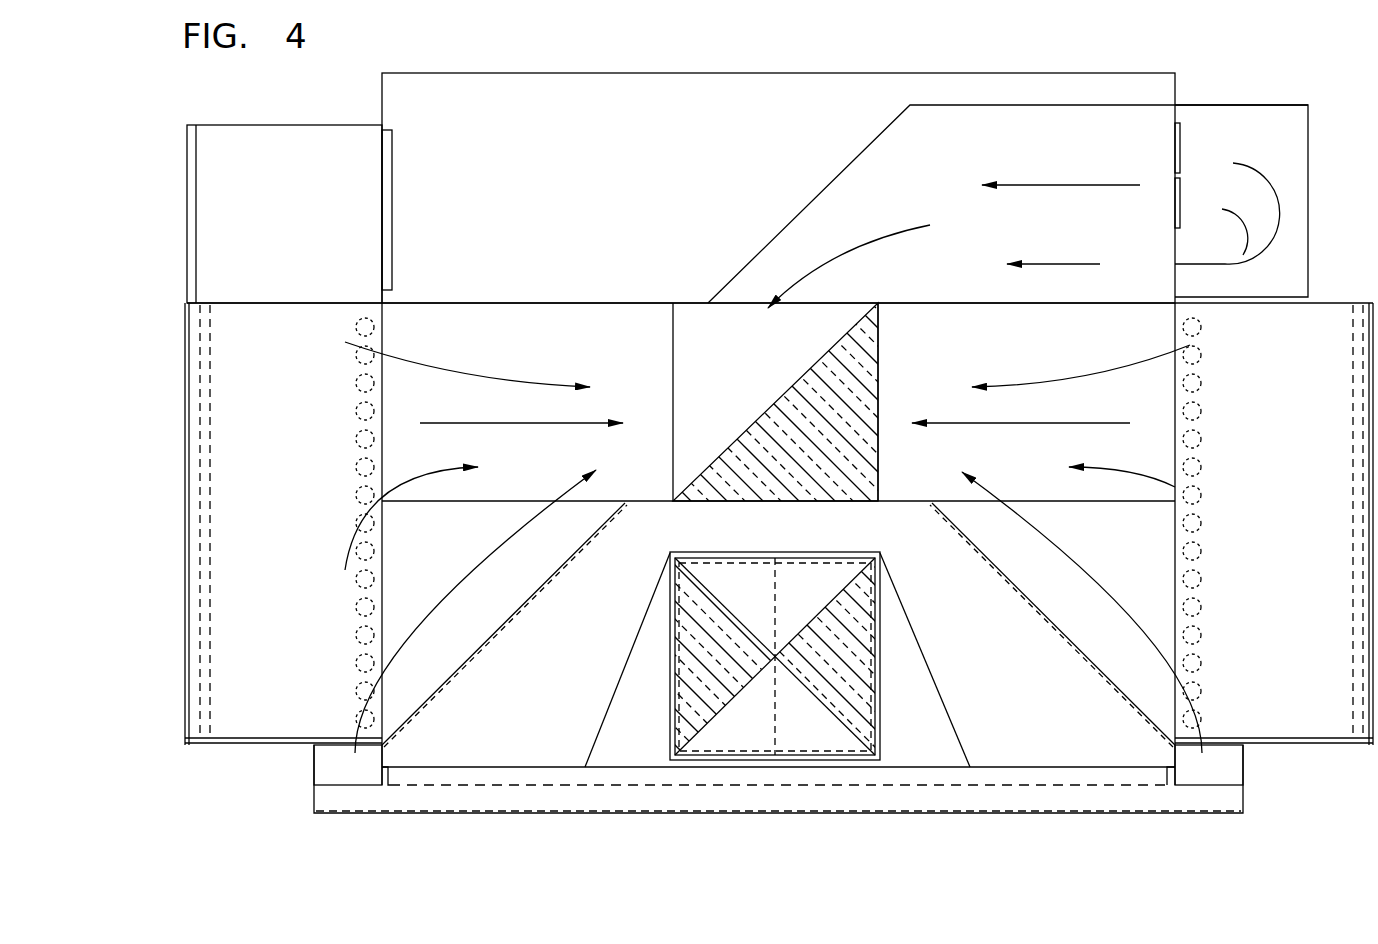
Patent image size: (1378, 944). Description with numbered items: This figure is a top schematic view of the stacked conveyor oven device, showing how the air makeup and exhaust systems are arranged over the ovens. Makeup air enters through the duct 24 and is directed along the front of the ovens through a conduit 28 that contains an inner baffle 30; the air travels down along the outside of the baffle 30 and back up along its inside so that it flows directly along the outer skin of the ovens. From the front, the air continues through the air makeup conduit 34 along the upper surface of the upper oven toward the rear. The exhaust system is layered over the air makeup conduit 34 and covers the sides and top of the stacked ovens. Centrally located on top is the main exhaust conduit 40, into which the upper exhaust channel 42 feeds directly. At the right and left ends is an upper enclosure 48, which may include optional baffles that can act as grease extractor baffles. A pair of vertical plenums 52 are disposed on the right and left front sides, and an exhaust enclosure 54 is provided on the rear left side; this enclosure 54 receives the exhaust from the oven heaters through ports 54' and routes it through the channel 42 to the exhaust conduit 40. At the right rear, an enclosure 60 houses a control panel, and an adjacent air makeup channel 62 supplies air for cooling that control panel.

The duct 24 is at (882, 628).
The conduit 28 is at (758, 814).
The inner baffle 30 is at (834, 789).
The air makeup conduit 34 is at (613, 227).
The exhaust conduit 40 is at (882, 363).
The upper exhaust channel 42 is at (902, 205).
The upper enclosure 48 is at (1275, 440).
The vertical plenum 52 is at (314, 762).
The exhaust enclosure 54 is at (1264, 177).
The ports 54' is at (1215, 168).
The enclosure 60 is at (185, 191).
The air makeup channel 62 is at (289, 220).